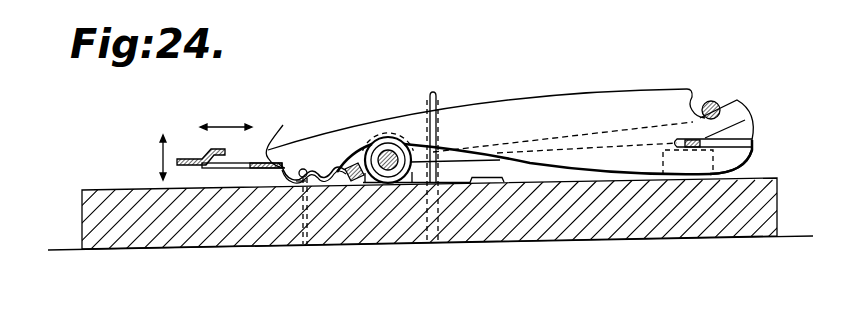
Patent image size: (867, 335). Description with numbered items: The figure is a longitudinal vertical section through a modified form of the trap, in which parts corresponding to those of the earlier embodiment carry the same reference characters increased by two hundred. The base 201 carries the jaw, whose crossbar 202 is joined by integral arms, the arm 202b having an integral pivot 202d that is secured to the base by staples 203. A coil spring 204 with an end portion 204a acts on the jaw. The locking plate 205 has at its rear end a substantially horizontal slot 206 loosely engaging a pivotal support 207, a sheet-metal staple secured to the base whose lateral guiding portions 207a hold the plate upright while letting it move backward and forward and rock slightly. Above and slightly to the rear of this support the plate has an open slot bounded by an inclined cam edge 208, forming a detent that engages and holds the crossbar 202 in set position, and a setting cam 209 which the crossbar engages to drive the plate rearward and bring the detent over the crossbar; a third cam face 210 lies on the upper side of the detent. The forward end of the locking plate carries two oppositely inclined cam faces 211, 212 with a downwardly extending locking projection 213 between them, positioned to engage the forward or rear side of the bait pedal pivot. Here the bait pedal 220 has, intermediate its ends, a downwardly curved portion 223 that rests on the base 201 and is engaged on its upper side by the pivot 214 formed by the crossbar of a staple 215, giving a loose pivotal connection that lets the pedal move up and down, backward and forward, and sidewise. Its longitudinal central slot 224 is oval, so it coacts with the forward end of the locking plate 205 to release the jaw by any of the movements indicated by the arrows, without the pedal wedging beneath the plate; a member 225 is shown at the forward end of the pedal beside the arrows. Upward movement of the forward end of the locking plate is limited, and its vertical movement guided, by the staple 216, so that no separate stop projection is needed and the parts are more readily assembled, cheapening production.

The base 201 is at (95, 195).
The crossbar of the jaw 202 is at (713, 102).
The jaw arm 202b is at (443, 153).
The pivot 202d is at (389, 170).
The staple 203 is at (370, 183).
The coil spring 204 is at (368, 138).
The end portion of coil spring 204a is at (477, 181).
The locking plate 205 is at (568, 93).
The horizontal slot 206 is at (740, 143).
The pivotal support 207 is at (745, 124).
The lateral guiding portions 207a is at (730, 176).
The inclined cam edge (detent) 208 is at (690, 97).
The setting cam 209 is at (737, 104).
The third cam face 210 is at (710, 100).
The inclined cam face 211 is at (277, 135).
The inclined cam face 212 is at (348, 162).
The locking projection 213 is at (317, 168).
The pivot 214 is at (302, 169).
The staple 215 is at (308, 213).
The staple 216 is at (432, 92).
The slide plate 220 is at (232, 176).
The downwardly curved portion 223 is at (300, 178).
The longitudinal central slot 224 is at (285, 168).
The hook member 225 is at (206, 151).